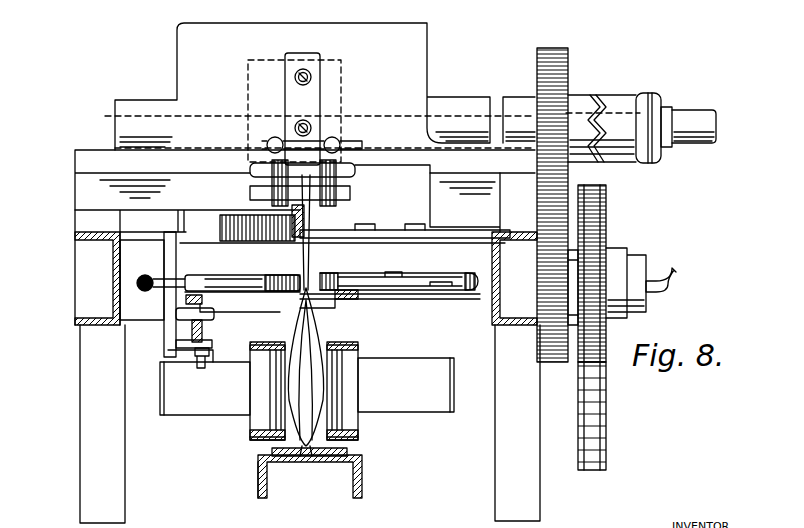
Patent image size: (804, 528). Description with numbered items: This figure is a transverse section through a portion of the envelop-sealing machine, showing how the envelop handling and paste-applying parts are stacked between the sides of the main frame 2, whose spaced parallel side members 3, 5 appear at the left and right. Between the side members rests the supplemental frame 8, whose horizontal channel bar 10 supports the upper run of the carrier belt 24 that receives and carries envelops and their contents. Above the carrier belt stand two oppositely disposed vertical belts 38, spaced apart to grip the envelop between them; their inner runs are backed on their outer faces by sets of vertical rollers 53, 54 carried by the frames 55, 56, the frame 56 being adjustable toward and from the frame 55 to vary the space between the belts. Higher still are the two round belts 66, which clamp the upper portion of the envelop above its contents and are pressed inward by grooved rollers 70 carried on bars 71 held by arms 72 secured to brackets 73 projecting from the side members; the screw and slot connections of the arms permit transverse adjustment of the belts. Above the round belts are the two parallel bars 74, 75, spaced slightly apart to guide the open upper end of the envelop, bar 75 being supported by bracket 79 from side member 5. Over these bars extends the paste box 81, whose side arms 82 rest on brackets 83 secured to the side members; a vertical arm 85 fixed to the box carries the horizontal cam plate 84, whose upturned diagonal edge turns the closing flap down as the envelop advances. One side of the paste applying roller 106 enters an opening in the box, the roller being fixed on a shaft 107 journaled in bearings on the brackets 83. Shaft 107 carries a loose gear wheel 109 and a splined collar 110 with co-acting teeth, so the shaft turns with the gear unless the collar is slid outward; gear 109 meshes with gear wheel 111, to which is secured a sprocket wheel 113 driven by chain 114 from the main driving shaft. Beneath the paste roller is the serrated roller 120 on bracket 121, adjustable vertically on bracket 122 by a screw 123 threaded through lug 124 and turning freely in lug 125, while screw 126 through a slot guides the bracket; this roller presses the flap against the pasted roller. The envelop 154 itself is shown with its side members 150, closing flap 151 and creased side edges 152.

The main frame 2 is at (85, 450).
The side member 3 is at (75, 236).
The side member 5 is at (540, 501).
The supplemental frame 8 is at (258, 486).
The channel bar 10 is at (362, 484).
The belt 24 is at (280, 462).
The vertical belts 38 is at (262, 373).
The vertical rollers 53 is at (256, 402).
The vertical rollers 54 is at (358, 403).
The frame 55 is at (262, 438).
The frame 56 is at (356, 438).
The belts 66 is at (476, 306).
The grooved rollers 70 is at (248, 302).
The bars 71 is at (262, 312).
The arms 72 is at (205, 290).
The brackets 73 is at (441, 298).
The bar 74 is at (296, 240).
The bar 75 is at (309, 243).
The bracket 79 is at (379, 232).
The paste box 81 is at (398, 26).
The side arms 82 is at (97, 130).
The brackets 83 is at (88, 186).
The cam plate 84 is at (350, 196).
The vertical arm 85 is at (270, 92).
The paste applying roller 106 is at (341, 90).
The shaft 107 is at (668, 119).
The gear wheel 109 is at (566, 58).
The collar 110 is at (610, 96).
The gear wheel 111 is at (560, 362).
The sprocket wheel 113 is at (605, 225).
The chain 114 is at (600, 425).
The serrated roller 120 is at (250, 242).
The bracket 121 is at (178, 248).
The bracket 122 is at (174, 333).
The screw 123 is at (190, 346).
The lug 124 is at (185, 318).
The lug 125 is at (192, 360).
The screw 126 is at (185, 267).
The side members 150 is at (296, 305).
The closing flap 151 is at (250, 167).
The side edges 152 is at (318, 456).
The envelop 154 is at (302, 460).